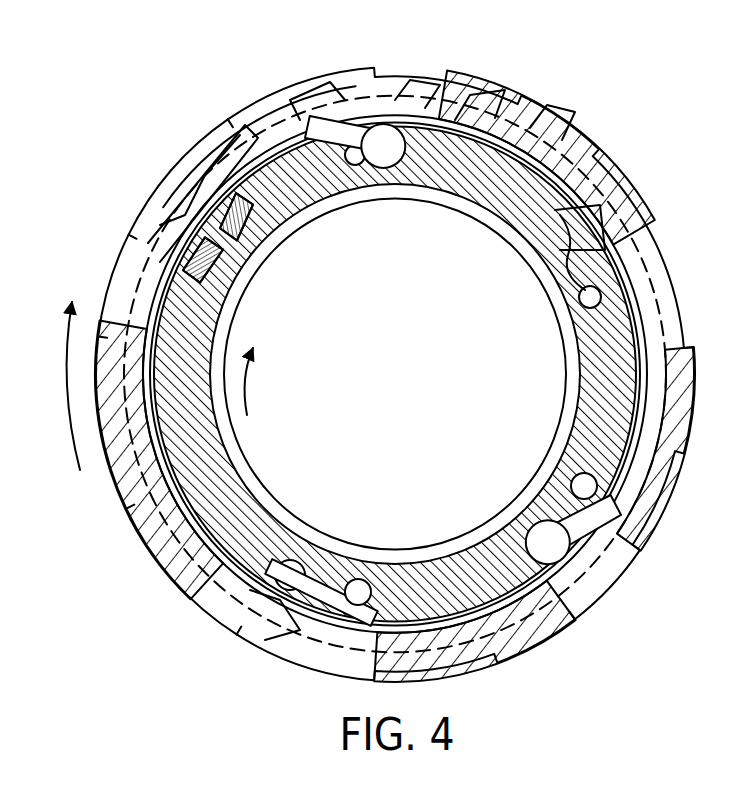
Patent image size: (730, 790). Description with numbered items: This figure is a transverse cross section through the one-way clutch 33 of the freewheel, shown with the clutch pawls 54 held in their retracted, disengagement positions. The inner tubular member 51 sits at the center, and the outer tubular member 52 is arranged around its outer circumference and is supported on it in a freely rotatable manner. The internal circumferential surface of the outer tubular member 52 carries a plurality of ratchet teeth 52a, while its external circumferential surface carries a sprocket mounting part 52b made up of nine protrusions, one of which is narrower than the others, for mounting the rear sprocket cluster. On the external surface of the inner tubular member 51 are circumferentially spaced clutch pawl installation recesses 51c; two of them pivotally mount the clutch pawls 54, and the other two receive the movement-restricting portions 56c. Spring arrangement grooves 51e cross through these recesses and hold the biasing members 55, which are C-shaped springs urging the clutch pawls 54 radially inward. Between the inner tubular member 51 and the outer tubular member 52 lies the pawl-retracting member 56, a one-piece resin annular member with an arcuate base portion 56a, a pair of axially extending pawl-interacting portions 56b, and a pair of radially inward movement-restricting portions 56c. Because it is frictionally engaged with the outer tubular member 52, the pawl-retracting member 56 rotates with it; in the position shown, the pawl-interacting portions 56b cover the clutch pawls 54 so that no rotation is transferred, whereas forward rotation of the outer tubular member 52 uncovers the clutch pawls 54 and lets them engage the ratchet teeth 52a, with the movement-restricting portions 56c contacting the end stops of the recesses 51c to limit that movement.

The one-way clutch 33 is at (604, 102).
The inner tubular member 51 is at (205, 470).
The clutch pawl installation recesses 51c is at (351, 192).
The spring arrangement grooves 51e is at (247, 247).
The outer tubular member 52 is at (248, 110).
The ratchet teeth 52a is at (470, 107).
The sprocket mounting part 52b is at (547, 113).
The clutch pawls 54 is at (366, 106).
The biasing members 55 is at (573, 244).
The pawl-retracting member 56 is at (584, 172).
The base portion 56a is at (177, 227).
The pawl-interacting portions 56b is at (412, 105).
The movement-restricting portions 56c is at (627, 268).